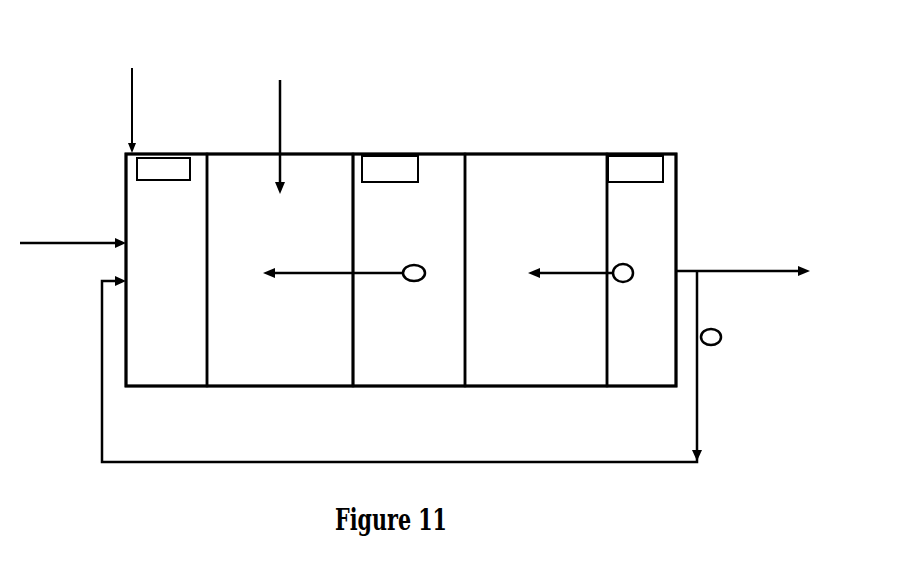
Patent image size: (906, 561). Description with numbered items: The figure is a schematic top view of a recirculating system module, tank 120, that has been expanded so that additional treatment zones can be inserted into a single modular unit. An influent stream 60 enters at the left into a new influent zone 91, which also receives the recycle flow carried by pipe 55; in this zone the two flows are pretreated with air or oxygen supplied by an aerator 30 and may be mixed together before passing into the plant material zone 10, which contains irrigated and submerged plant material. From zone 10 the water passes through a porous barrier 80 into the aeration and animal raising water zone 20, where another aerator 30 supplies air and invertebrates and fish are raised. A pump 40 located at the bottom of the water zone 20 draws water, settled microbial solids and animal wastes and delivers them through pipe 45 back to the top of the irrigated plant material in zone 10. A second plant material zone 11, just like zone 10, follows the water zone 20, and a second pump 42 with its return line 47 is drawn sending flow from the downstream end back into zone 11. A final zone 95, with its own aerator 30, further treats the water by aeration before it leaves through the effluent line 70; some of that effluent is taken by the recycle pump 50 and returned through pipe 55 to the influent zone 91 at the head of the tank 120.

The plant material zone 10 is at (280, 270).
The second plant material zone 11 is at (536, 270).
The aeration and animal raising water zone 20 is at (409, 270).
The aerator 30 is at (400, 169).
The pump 40 is at (430, 274).
The second recycle pump 42 is at (637, 274).
The pipe 45 is at (333, 284).
The second internal recycle line 47 is at (570, 285).
The recycle pump 50 is at (726, 339).
The recycle pipe 55 is at (415, 366).
The influent stream 60 is at (156, 161).
The effluent line 70 is at (743, 284).
The porous barrier 80 is at (366, 270).
The influent zone 91 is at (166, 270).
The final zone 95 is at (641, 270).
The tank 120 is at (131, 99).